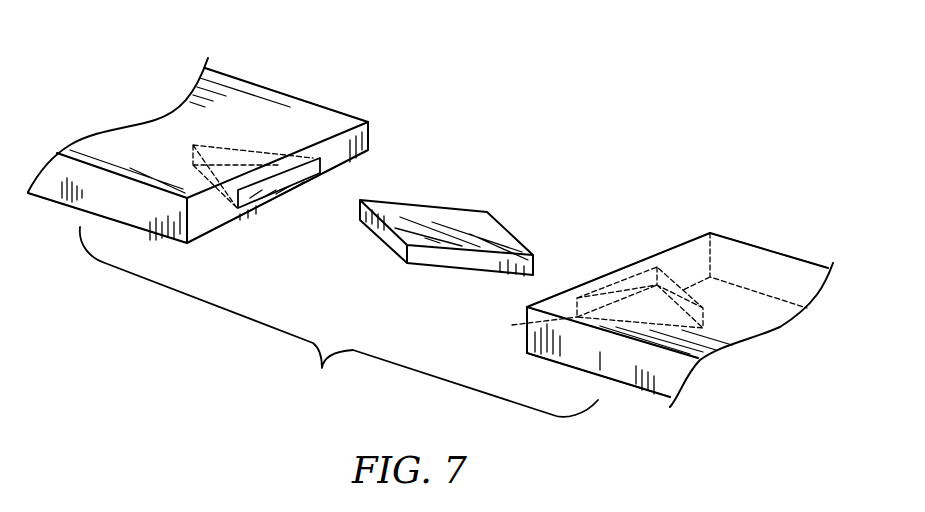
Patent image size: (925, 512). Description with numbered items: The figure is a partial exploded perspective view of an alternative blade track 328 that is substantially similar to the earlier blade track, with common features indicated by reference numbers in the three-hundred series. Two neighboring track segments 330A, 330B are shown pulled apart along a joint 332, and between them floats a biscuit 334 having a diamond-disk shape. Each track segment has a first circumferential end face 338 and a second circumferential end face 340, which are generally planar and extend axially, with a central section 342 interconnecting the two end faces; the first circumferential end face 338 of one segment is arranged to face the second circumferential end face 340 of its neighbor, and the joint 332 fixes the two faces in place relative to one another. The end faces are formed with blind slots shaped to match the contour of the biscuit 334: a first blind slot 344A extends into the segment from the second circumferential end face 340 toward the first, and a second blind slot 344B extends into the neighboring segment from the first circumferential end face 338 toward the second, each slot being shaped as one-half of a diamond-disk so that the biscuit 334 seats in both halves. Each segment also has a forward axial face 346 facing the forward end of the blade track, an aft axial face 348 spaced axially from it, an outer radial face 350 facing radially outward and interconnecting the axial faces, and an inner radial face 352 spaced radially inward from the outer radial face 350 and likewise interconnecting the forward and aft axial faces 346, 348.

The blade track 328 is at (645, 117).
The track segment 330A is at (227, 97).
The track segment 330B is at (770, 263).
The joint 332 is at (456, 135).
The biscuit 334 is at (462, 218).
The first circumferential end face 338 is at (527, 322).
The second circumferential end face 340 is at (195, 230).
The central section 342 is at (107, 147).
The first blind slot 344A is at (334, 170).
The second blind slot 344B is at (638, 292).
The forward axial face 346 is at (93, 202).
The aft axial face 348 is at (282, 108).
The outer radial face 350 is at (160, 130).
The inner radial face 352 is at (113, 203).